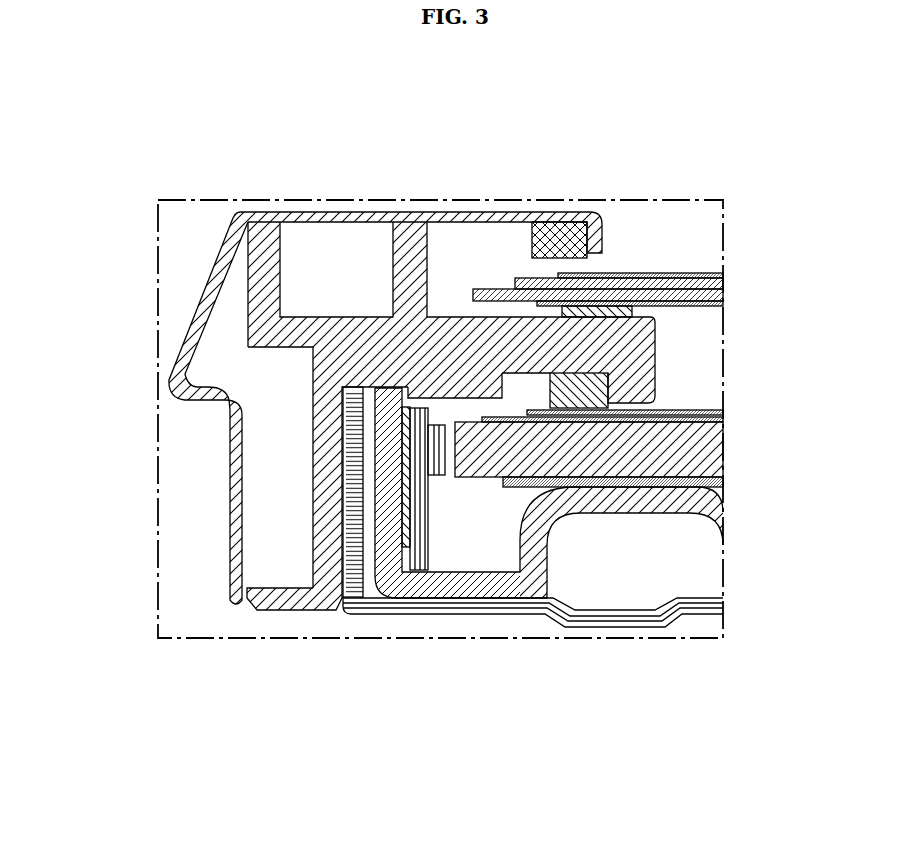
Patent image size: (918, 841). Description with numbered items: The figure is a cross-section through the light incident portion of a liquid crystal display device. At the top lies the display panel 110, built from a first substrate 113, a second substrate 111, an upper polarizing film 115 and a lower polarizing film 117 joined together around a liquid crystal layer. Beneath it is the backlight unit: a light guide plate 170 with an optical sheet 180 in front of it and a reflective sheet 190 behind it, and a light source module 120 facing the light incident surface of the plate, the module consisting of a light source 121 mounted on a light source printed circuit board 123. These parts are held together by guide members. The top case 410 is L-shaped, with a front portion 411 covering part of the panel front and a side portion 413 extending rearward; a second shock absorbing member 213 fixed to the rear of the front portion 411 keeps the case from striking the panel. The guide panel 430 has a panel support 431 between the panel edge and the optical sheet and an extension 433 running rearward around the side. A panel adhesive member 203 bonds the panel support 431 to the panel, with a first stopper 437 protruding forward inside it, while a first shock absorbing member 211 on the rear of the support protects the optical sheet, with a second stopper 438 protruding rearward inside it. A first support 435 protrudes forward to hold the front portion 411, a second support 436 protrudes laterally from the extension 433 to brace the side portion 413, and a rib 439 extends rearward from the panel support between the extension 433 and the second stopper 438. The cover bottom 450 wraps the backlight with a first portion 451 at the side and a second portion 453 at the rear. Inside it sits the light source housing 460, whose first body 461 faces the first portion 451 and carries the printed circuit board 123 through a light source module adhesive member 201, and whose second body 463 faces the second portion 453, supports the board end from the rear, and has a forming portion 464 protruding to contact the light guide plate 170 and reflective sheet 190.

The display panel 110 is at (800, 235).
The second substrate 111 is at (715, 295).
The first substrate 113 is at (717, 284).
The upper polarizing film 115 is at (703, 273).
The lower polarizing film 117 is at (717, 305).
The light source module 120 is at (513, 138).
The light source 121 is at (440, 426).
The light source printed circuit board 123 is at (422, 408).
The light guide plate 170 is at (715, 445).
The optical sheet 180 is at (723, 413).
The reflective sheet 190 is at (715, 484).
The light source module adhesive member 201 is at (415, 407).
The panel adhesive member 203 is at (603, 306).
The first shock absorbing member 211 is at (652, 373).
The second shock absorbing member 213 is at (560, 222).
The top case 410 is at (68, 215).
The front portion 411 is at (285, 212).
The side portion 413 is at (195, 280).
The guide panel 430 is at (68, 602).
The panel support 431 is at (370, 353).
The extension 433 is at (322, 467).
The first support 435 is at (395, 283).
The second support 436 is at (278, 590).
The first stopper 437 is at (641, 398).
The second stopper 438 is at (583, 386).
The rib 439 is at (477, 385).
The cover bottom 450 is at (405, 705).
The first portion 451 is at (350, 562).
The second portion 453 is at (386, 606).
The light source housing 460 is at (642, 705).
The first body 461 is at (397, 500).
The second body 463 is at (513, 600).
The forming portion 464 is at (622, 503).